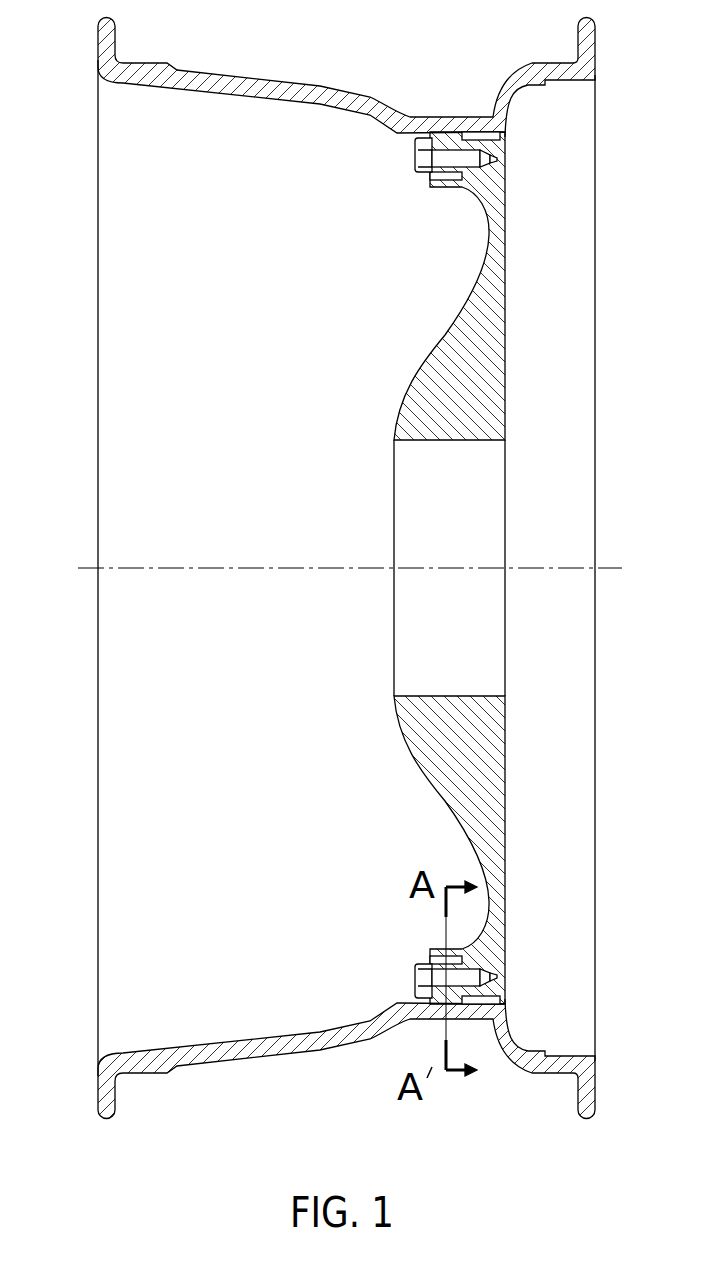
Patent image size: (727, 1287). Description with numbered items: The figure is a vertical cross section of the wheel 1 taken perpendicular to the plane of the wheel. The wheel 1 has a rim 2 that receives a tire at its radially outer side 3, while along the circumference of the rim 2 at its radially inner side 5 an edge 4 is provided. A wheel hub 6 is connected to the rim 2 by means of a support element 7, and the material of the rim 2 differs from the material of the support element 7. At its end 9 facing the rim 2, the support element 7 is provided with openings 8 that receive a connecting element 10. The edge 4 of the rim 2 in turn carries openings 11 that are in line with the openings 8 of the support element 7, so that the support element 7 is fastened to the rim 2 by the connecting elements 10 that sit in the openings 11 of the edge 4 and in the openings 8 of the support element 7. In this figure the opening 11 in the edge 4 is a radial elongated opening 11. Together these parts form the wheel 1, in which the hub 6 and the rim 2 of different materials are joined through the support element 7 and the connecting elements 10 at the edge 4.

The wheel 1 is at (98, 147).
The rim 2 is at (240, 78).
The radially outer side 3 is at (359, 49).
The edge 4 is at (464, 568).
The radially inner side 5 is at (196, 156).
The wheel hub 6 is at (488, 495).
The support element 7 is at (488, 403).
The openings 8 is at (493, 163).
The end 9 is at (497, 133).
The connecting element 10 is at (418, 157).
The openings 11 is at (432, 173).